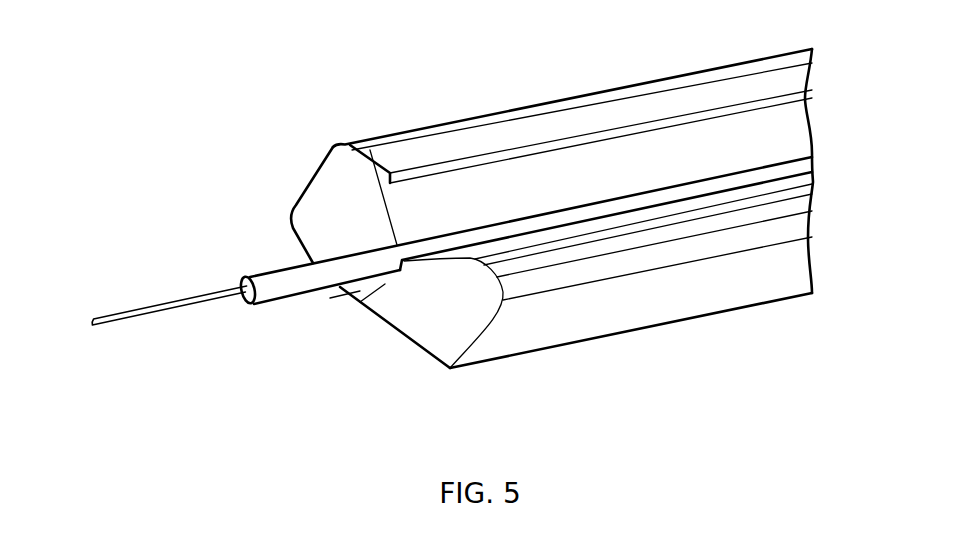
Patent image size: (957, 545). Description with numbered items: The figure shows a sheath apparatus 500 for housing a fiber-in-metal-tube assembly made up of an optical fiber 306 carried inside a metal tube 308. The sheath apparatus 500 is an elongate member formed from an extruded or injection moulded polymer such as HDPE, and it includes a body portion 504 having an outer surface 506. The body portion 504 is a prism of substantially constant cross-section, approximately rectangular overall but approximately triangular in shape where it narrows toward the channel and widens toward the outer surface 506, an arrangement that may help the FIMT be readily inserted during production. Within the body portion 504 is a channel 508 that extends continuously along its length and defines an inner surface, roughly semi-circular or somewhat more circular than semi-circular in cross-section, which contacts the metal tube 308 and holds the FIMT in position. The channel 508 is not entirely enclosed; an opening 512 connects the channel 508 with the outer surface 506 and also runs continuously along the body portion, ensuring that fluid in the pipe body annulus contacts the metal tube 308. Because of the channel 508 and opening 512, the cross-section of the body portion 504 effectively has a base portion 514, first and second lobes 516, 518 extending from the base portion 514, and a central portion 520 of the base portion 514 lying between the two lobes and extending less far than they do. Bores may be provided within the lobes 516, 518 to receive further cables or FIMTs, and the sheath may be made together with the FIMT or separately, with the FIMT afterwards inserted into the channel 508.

The sheath apparatus 500 is at (514, 220).
The outer surface 506 is at (514, 171).
The body portion 504 is at (576, 291).
The channel 508 is at (400, 268).
The opening 512 is at (418, 212).
The base portion 514 is at (363, 290).
The first lobe 516 is at (306, 217).
The second lobe 518 is at (477, 307).
The central portion 520 is at (385, 283).
The metal tube 308 is at (257, 272).
The optical fiber 306 is at (118, 324).